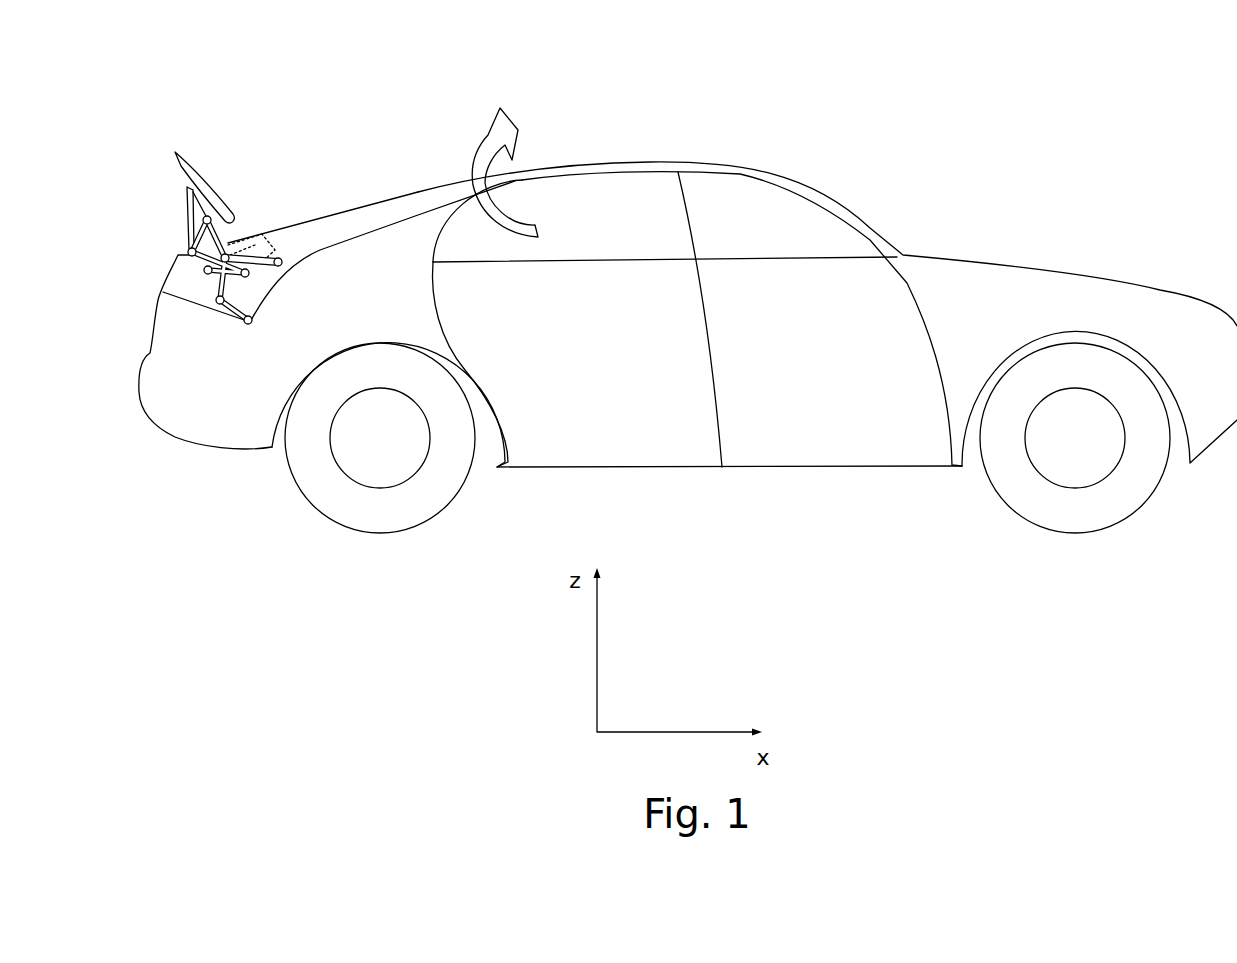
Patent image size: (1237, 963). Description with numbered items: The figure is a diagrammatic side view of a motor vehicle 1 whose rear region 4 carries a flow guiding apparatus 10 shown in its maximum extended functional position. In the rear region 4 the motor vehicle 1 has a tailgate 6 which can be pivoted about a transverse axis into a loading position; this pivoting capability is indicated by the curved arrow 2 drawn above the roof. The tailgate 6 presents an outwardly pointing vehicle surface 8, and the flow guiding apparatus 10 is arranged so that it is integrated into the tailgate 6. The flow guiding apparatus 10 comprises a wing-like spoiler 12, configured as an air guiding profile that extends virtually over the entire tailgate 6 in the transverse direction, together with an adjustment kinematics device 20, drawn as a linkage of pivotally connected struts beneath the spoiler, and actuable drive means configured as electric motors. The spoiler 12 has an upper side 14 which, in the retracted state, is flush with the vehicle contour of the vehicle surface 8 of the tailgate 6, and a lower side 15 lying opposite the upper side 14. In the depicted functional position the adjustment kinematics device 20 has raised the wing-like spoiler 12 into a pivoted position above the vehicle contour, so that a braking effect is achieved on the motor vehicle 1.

The motor vehicle 1 is at (745, 115).
The arrow 2 is at (492, 143).
The rear region 4 is at (280, 204).
The tailgate 6 is at (374, 208).
The vehicle surface 8 is at (303, 220).
The flow guiding apparatus 10 is at (180, 206).
The wing-like spoiler 12 is at (186, 177).
The upper side 14 is at (195, 168).
The lower side 15 is at (185, 182).
The adjustment kinematics device 20 is at (203, 290).